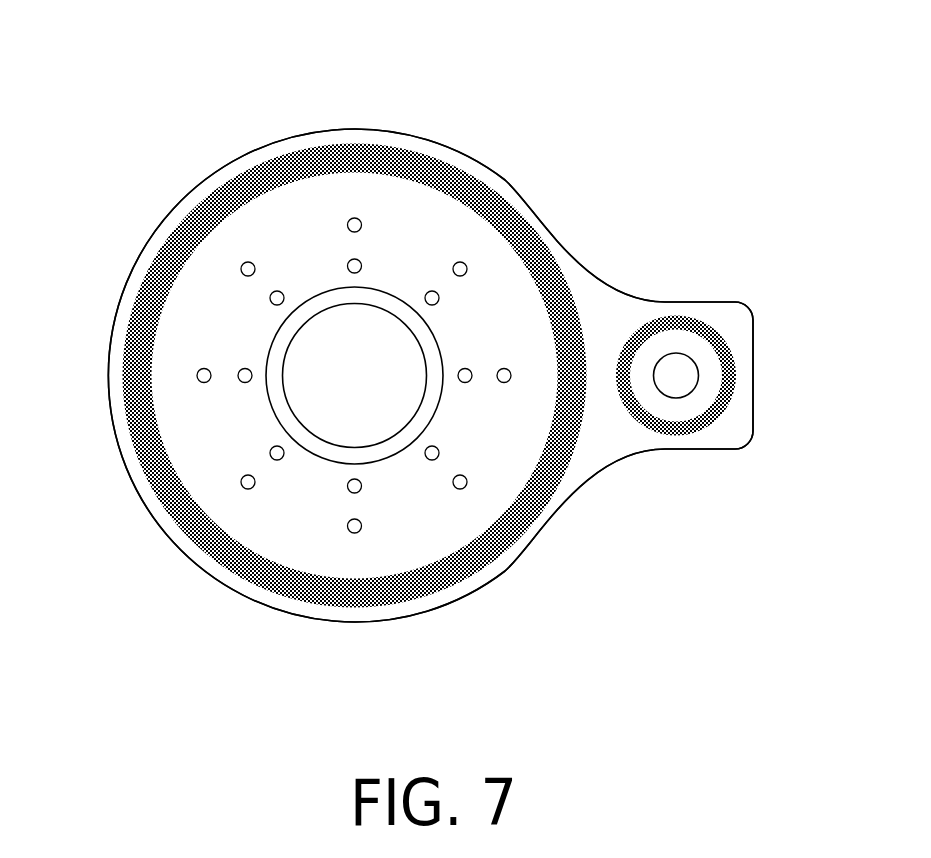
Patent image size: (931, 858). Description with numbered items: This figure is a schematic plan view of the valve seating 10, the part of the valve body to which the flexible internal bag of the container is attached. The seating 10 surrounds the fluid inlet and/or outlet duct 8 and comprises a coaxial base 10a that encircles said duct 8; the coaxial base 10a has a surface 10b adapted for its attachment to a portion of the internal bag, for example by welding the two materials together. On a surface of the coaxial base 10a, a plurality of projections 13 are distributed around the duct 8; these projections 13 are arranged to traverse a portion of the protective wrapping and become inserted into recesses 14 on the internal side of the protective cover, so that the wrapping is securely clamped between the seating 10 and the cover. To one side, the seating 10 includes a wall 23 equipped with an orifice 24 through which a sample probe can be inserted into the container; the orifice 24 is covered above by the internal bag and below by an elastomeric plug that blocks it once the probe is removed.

The seating 10 is at (160, 177).
The coaxial base 10a is at (313, 202).
The surface 10b is at (457, 182).
The projections 13 is at (469, 370).
The fluid inlet and/or outlet duct 8 is at (398, 440).
The recesses 14 is at (517, 445).
The wall 23 is at (725, 315).
The orifice 24 is at (683, 397).